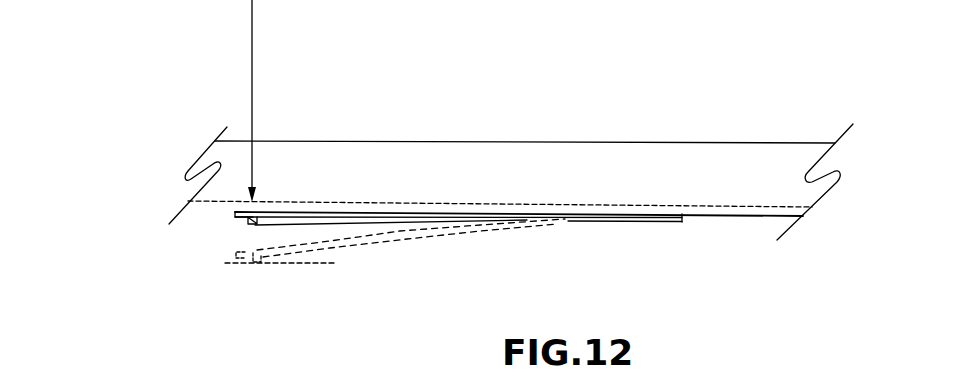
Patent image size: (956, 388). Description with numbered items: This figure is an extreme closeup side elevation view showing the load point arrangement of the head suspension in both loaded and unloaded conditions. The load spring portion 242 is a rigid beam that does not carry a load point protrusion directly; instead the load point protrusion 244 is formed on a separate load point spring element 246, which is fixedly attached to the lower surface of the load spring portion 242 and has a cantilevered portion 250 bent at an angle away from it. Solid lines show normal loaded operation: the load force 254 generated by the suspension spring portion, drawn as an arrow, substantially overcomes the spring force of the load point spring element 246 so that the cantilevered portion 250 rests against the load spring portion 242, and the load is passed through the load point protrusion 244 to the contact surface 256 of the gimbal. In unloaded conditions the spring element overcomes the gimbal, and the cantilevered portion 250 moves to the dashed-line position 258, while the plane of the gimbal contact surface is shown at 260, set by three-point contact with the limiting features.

The load spring portion 242 is at (772, 168).
The load point protrusion 244 is at (247, 221).
The load point spring element 246 is at (237, 213).
The cantilevered portion 250 is at (357, 212).
The load force 254 is at (252, 54).
The contact surface 256 is at (245, 222).
The unloaded position of cantilever portion 258 is at (403, 238).
The plane of gimbal contact surface during unloaded conditions 260 is at (295, 263).